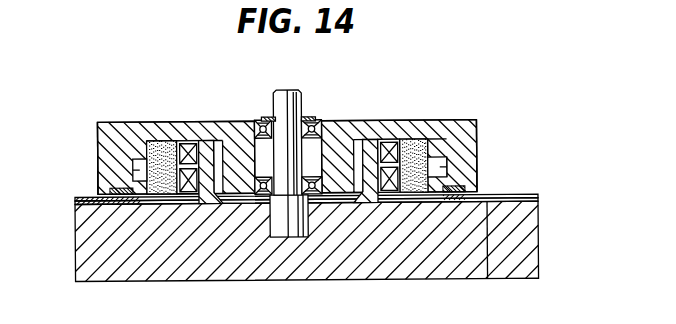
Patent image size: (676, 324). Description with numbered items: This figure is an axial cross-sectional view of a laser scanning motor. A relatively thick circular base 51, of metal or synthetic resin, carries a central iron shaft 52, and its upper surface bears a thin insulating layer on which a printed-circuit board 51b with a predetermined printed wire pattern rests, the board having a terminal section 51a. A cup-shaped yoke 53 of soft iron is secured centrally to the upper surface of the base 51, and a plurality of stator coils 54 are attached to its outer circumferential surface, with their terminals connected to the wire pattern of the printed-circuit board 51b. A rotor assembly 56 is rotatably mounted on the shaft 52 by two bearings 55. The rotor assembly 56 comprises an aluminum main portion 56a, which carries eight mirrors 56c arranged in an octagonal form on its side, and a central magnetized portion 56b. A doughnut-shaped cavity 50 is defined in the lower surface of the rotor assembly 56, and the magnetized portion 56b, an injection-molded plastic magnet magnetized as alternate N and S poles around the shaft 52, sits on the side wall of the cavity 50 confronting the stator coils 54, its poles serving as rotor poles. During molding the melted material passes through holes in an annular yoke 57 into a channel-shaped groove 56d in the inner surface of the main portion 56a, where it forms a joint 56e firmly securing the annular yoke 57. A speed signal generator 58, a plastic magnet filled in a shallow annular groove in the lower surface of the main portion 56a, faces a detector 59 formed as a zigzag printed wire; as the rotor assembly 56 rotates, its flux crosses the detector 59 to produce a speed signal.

The doughnut-shaped cavity 50 is at (221, 140).
The base 51 is at (112, 280).
The terminal section 51a is at (538, 200).
The printed-circuit board 51b is at (536, 196).
The shaft 52 is at (287, 91).
The cup-shaped yoke 53 is at (366, 203).
The stator coils 54 is at (187, 141).
The bearings 55 is at (315, 119).
The rotor assembly 56 is at (442, 104).
The main portion 56a is at (461, 122).
The magnetized portion 56b is at (164, 140).
The mirrors 56c is at (92, 137).
The channel-shaped groove 56d is at (452, 140).
The joint 56e is at (447, 160).
The annular yoke 57 is at (137, 157).
The speed signal generator 58 is at (112, 190).
The detector 59 is at (115, 203).